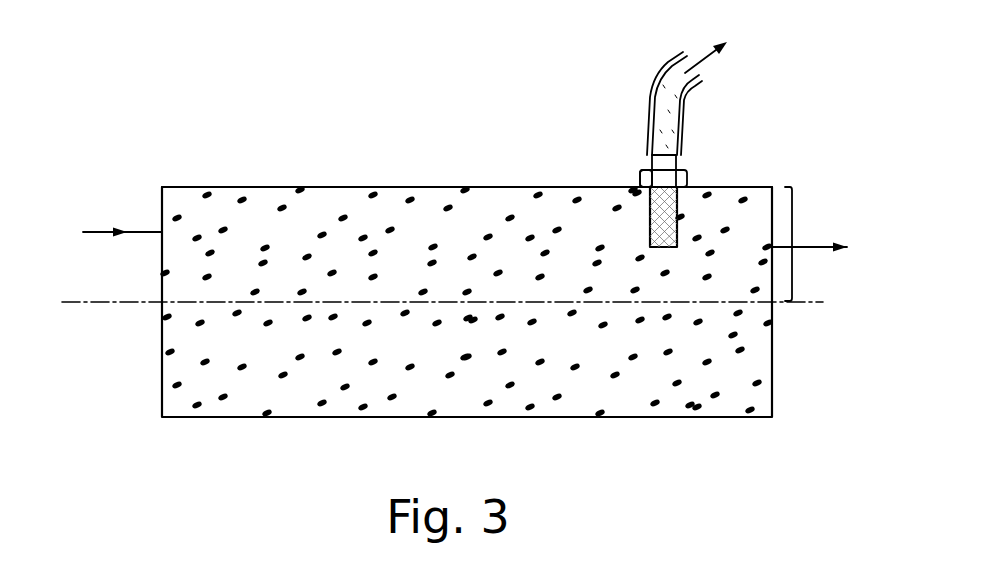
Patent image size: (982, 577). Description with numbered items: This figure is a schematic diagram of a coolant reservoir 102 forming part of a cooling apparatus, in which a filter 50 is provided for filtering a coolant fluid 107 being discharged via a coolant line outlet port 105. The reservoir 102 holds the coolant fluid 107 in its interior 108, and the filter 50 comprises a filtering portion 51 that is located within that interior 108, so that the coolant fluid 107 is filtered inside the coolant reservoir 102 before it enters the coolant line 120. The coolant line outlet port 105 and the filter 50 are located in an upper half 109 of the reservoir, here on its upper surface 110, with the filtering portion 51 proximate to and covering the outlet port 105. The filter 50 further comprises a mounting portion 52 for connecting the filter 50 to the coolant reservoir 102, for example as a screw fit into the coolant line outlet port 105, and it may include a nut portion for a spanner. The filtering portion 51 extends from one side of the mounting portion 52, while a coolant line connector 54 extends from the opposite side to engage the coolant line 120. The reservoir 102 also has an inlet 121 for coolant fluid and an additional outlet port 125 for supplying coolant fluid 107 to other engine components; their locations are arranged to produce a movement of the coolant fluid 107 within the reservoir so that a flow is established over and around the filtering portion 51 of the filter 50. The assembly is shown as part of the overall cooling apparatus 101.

The exhaust gas aftertreatment system 101 is at (562, 87).
The coolant reservoir 102 is at (403, 186).
The coolant line outlet port 105 is at (645, 197).
The coolant fluid 107 is at (463, 393).
The interior 108 is at (265, 203).
The upper half 109 is at (795, 246).
The upper surface 110 is at (553, 186).
The coolant line 120 is at (688, 108).
The inlet 121 is at (95, 232).
The additional outlet port 125 is at (825, 252).
The filter 50 is at (706, 175).
The filtering portion 51 is at (692, 216).
The mounting portion 52 is at (631, 166).
The coolant line connector 54 is at (668, 163).